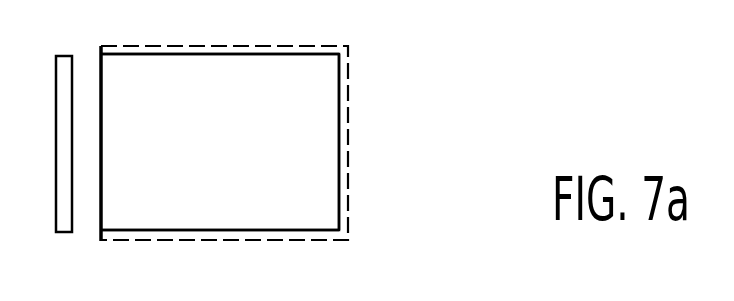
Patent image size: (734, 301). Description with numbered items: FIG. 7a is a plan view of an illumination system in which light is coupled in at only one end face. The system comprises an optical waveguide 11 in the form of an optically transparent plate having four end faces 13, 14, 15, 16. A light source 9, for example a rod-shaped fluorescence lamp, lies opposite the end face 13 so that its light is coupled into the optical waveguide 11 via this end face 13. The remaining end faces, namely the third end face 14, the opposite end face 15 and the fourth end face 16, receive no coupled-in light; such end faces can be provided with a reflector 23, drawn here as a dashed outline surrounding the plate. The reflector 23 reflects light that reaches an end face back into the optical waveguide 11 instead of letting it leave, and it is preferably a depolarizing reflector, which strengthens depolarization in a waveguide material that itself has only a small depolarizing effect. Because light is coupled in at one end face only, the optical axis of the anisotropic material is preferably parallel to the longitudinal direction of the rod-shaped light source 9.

The light source 9 is at (57, 143).
The optical waveguide 11 is at (293, 212).
The end face 13 is at (100, 72).
The third end face 14 is at (288, 50).
The end face 15 is at (343, 133).
The fourth end face 16 is at (203, 232).
The reflector 23 is at (342, 46).